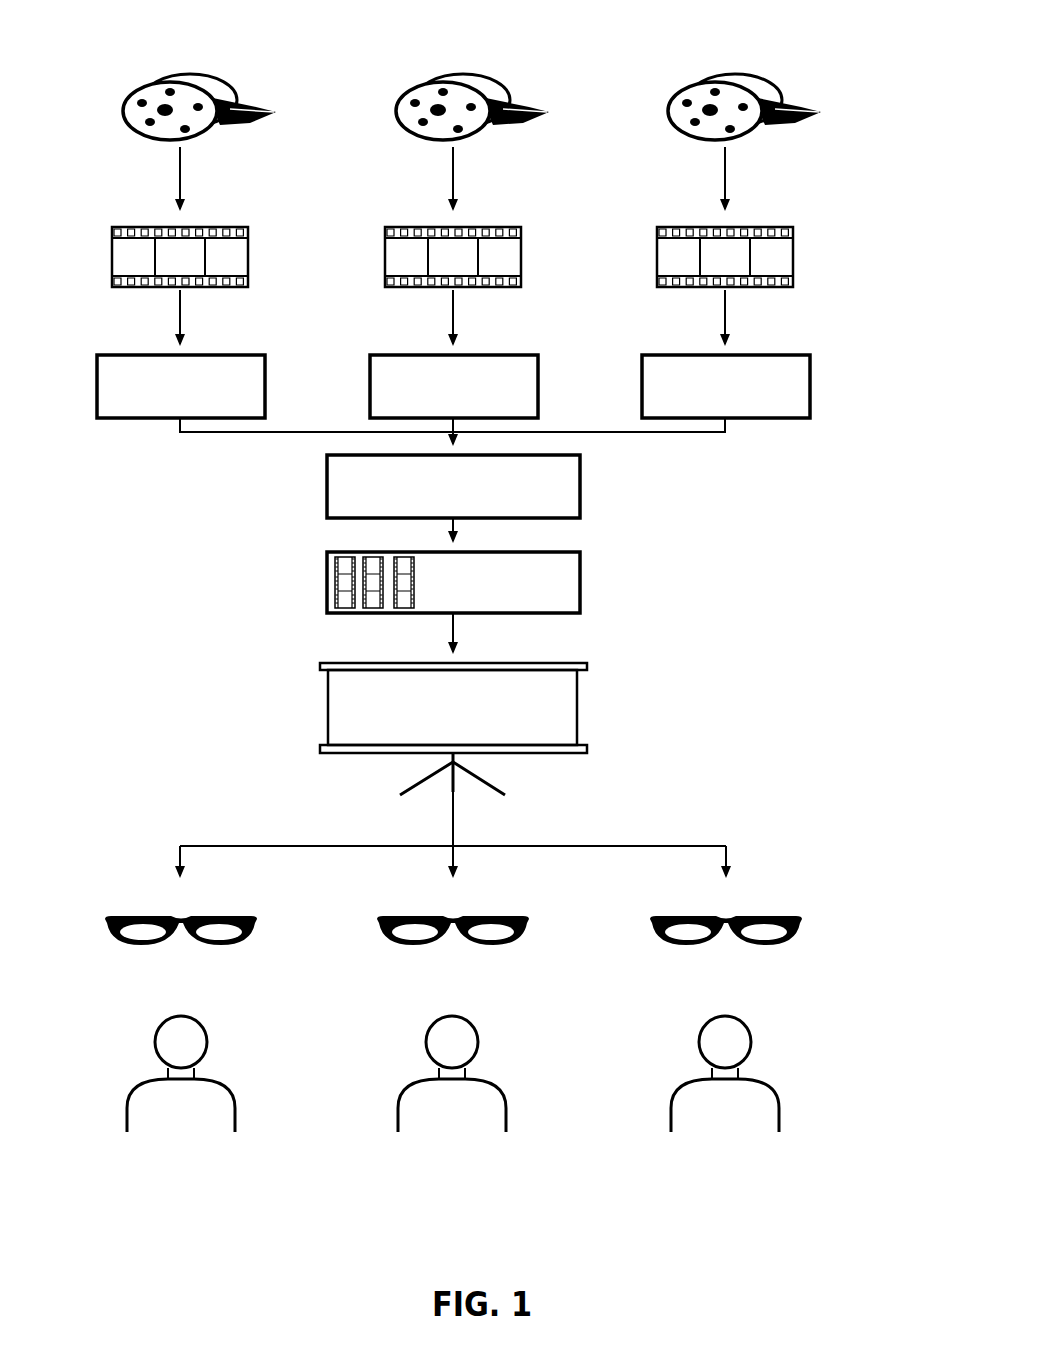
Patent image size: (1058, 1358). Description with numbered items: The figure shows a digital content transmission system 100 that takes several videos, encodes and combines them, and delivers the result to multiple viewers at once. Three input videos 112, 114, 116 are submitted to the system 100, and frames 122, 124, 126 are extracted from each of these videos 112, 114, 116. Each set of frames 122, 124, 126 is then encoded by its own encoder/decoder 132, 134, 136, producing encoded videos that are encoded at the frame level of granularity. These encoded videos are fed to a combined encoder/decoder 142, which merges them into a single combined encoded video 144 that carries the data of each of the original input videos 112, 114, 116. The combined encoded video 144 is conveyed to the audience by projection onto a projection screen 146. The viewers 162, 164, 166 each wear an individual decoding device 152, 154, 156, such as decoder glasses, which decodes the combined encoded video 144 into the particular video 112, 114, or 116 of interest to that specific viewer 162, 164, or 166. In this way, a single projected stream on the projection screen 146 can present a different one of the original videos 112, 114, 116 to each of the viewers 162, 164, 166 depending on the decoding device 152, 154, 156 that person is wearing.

The digital content transmission system 100 is at (950, 25).
The video 112 is at (100, 94).
The video 114 is at (368, 94).
The video 116 is at (640, 94).
The frames 122 is at (84, 250).
The frames 124 is at (349, 250).
The frames 126 is at (617, 250).
The encoder/decoder 132 is at (201, 401).
The encoder/decoder 134 is at (473, 401).
The encoder/decoder 136 is at (745, 401).
The combined encoder/decoder 142 is at (472, 501).
The combined encoded video 144 is at (472, 598).
The projection screen 146 is at (472, 718).
The decoding device 152 is at (72, 918).
The decoding device 154 is at (336, 918).
The decoding device 156 is at (606, 918).
The viewer 162 is at (86, 1048).
The viewer 164 is at (350, 1048).
The viewer 166 is at (620, 1048).